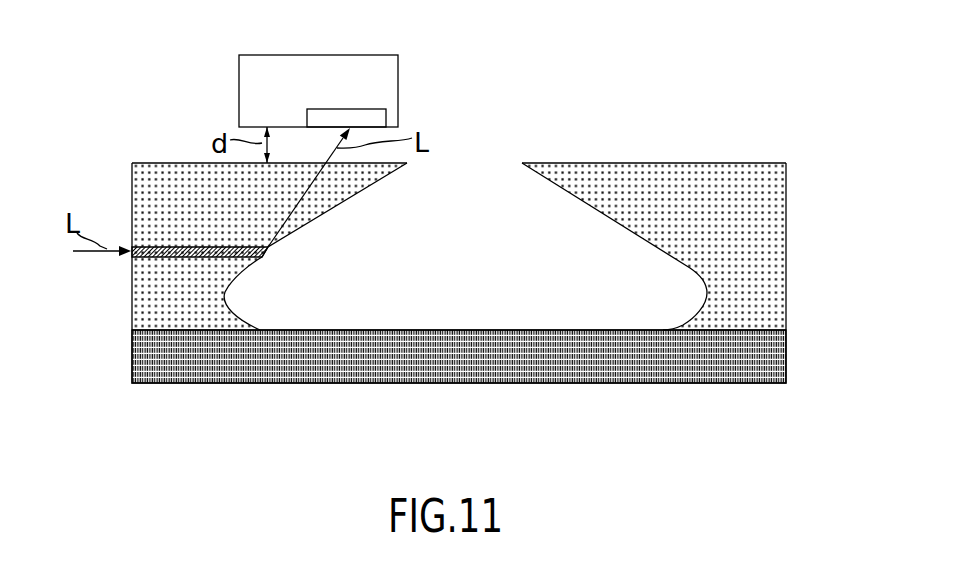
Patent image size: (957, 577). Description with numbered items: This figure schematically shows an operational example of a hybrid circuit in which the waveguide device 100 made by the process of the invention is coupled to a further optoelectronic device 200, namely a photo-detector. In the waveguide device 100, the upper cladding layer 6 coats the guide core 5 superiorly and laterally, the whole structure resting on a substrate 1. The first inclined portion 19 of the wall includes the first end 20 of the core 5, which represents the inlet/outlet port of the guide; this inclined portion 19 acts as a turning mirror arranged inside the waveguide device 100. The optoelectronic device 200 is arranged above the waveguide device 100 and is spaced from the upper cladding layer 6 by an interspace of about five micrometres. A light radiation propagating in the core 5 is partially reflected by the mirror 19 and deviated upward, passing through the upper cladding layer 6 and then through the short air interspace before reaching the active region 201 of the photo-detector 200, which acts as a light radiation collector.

The substrate 1 is at (153, 357).
The core 5 is at (167, 258).
The upper cladding layer 6 is at (140, 190).
The first inclined portion 19 is at (318, 233).
The first end 20 is at (267, 257).
The waveguide device 100 is at (316, 413).
The optoelectronic device 200 is at (408, 85).
The active region 201 is at (332, 110).